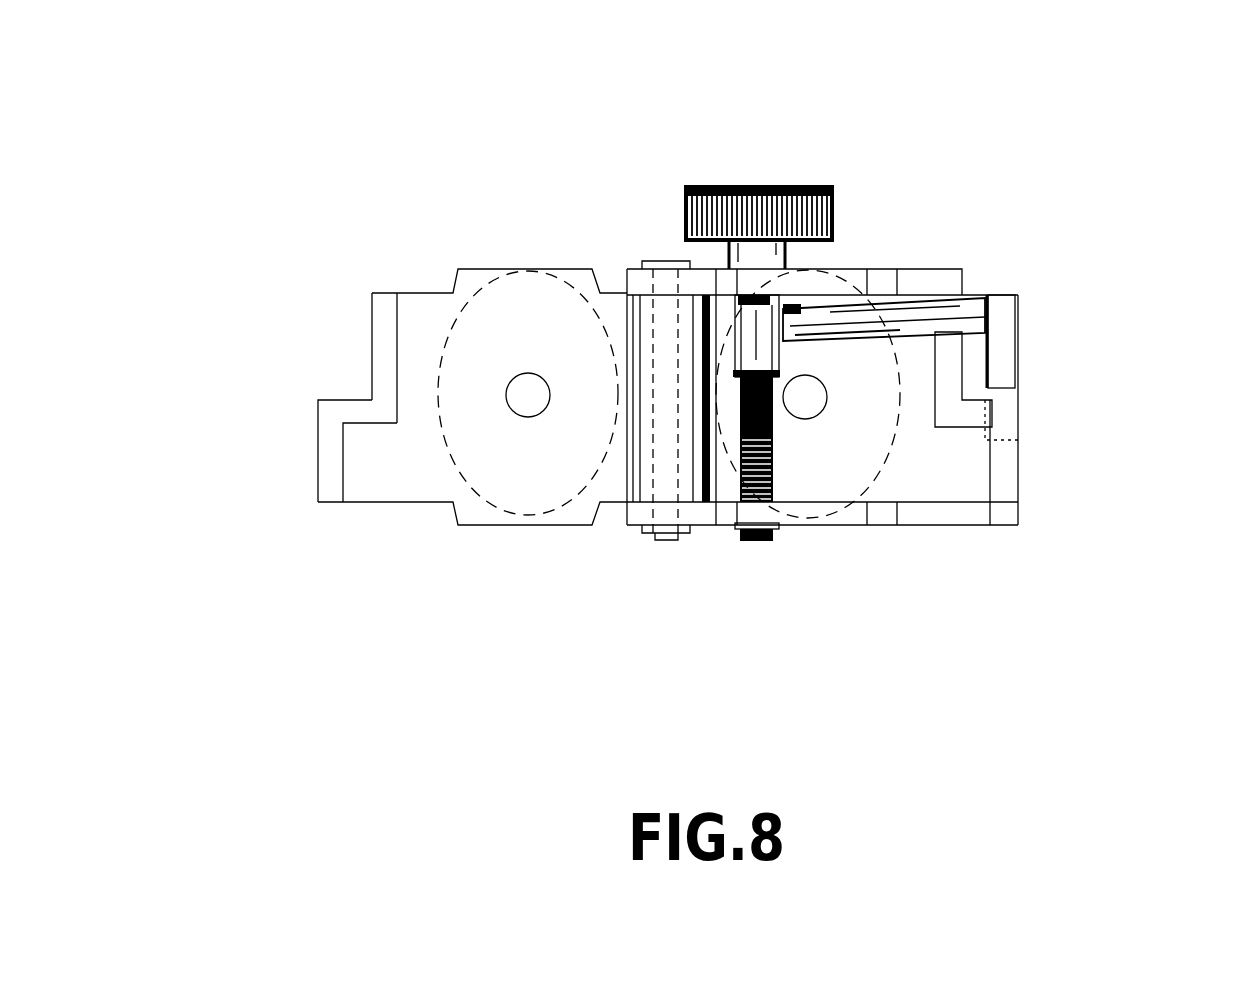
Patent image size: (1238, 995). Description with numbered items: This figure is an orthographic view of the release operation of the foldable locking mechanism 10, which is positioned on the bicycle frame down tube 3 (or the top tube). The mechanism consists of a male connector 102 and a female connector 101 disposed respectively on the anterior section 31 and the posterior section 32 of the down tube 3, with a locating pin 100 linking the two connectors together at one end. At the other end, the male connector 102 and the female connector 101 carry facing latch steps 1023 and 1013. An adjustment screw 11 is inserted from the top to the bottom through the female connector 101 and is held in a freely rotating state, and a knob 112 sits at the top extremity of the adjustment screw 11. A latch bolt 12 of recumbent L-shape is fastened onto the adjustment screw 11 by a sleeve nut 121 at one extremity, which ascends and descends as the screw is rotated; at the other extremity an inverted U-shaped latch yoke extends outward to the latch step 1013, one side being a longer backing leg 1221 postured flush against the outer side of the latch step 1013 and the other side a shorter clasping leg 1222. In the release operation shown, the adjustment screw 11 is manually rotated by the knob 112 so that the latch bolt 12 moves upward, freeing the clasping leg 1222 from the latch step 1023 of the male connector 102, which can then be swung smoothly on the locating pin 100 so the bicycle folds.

The foldable locking mechanism 10 is at (1058, 553).
The locating pin 100 is at (692, 262).
The female connector 101 is at (845, 282).
The male connector 102 is at (497, 282).
The latch step 1013 is at (977, 410).
The latch step 1023 is at (340, 402).
The adjustment screw 11 is at (706, 162).
The knob 112 is at (698, 187).
The latch bolt 12 is at (930, 315).
The sleeve nut 121 is at (753, 327).
The backing leg 1221 is at (1002, 417).
The clasping leg 1222 is at (1003, 332).
The down tube 3 is at (468, 642).
The anterior section 31 is at (822, 465).
The posterior section 32 is at (502, 463).